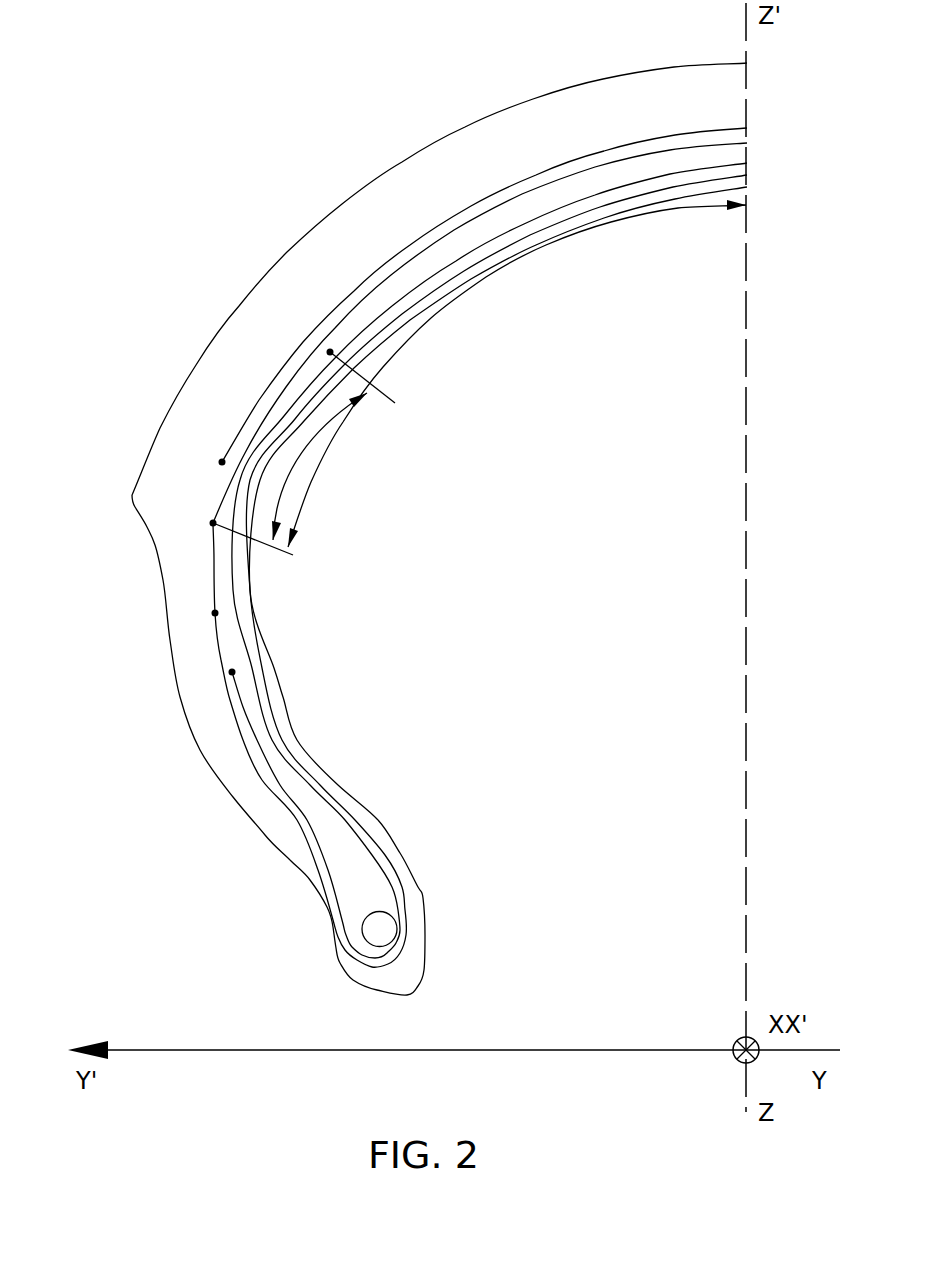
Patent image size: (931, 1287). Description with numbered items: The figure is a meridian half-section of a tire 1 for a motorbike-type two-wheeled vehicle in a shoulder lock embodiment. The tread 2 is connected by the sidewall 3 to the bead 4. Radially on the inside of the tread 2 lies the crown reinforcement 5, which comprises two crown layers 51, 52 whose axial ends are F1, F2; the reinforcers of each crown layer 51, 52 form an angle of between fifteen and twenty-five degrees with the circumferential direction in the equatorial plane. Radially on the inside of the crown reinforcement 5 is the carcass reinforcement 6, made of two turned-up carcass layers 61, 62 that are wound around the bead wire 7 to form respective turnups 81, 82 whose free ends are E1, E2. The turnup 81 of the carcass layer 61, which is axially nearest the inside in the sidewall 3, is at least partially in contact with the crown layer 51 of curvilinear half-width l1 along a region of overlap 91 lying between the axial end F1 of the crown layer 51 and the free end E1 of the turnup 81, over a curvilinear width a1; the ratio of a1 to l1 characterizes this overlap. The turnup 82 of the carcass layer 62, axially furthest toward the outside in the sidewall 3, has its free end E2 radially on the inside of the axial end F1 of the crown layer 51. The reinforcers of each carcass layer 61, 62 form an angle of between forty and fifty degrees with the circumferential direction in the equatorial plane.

The tire 1 is at (384, 96).
The tread 2 is at (300, 246).
The sidewall 3 is at (180, 695).
The bead 4 is at (423, 898).
The crown reinforcement 5 is at (96, 410).
The crown layer 51 is at (223, 498).
The crown layer 52 is at (240, 429).
The carcass reinforcement 6 is at (352, 667).
The turned-up carcass layer 61 is at (252, 668).
The turned-up carcass layer 62 is at (255, 698).
The bead wire 7 is at (382, 932).
The turnup 81 is at (215, 613).
The turnup 82 is at (273, 780).
The region of overlap 91 is at (275, 418).
The free end of turnup 81 E1 is at (330, 352).
The free end of turnup 82 E2 is at (215, 678).
The axial end of crown layer 51 F1 is at (238, 535).
The axial end of crown layer 52 F2 is at (207, 459).
The curvilinear width of overlap a1 is at (319, 466).
The curvilinear half-width of crown layer 51 l1 is at (517, 373).